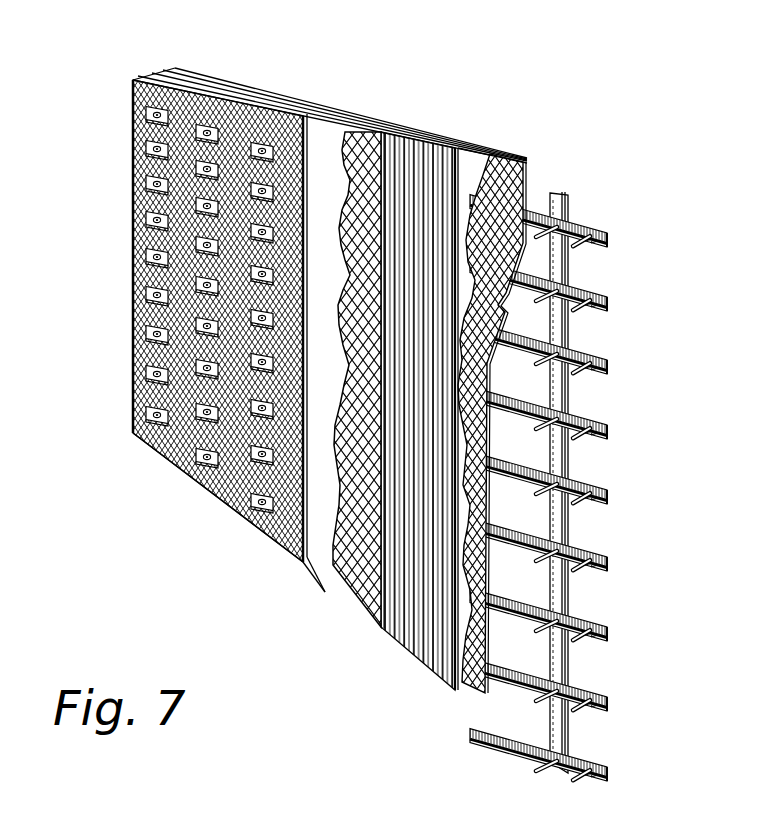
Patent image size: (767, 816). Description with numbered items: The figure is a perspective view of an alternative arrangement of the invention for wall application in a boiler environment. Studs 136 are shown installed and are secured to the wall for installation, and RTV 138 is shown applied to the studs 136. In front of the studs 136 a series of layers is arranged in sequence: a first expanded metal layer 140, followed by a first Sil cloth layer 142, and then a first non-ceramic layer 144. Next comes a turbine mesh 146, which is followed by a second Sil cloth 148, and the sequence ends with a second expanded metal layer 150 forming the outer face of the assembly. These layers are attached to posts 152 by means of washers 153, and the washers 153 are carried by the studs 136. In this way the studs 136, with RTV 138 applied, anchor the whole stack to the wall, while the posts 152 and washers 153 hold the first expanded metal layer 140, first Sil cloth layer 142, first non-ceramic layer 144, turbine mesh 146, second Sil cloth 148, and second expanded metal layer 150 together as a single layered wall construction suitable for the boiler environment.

The studs 136 is at (568, 195).
The RTV 138 is at (567, 220).
The first expanded metal layer 140 is at (528, 163).
The first Sil cloth layer 142 is at (509, 361).
The first non-ceramic layer 144 is at (443, 375).
The turbine mesh 146 is at (338, 331).
The second Sil cloth 148 is at (325, 592).
The second expanded metal layer 150 is at (220, 495).
The posts 152 is at (145, 437).
The washers 153 is at (153, 377).